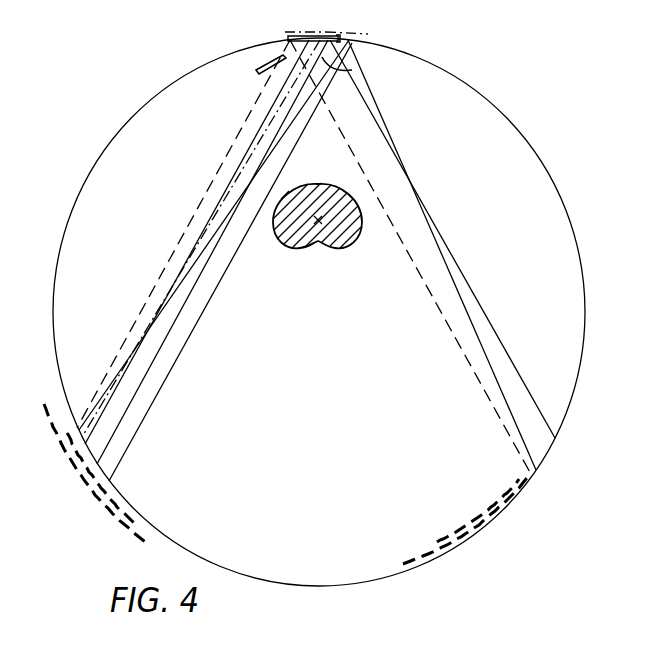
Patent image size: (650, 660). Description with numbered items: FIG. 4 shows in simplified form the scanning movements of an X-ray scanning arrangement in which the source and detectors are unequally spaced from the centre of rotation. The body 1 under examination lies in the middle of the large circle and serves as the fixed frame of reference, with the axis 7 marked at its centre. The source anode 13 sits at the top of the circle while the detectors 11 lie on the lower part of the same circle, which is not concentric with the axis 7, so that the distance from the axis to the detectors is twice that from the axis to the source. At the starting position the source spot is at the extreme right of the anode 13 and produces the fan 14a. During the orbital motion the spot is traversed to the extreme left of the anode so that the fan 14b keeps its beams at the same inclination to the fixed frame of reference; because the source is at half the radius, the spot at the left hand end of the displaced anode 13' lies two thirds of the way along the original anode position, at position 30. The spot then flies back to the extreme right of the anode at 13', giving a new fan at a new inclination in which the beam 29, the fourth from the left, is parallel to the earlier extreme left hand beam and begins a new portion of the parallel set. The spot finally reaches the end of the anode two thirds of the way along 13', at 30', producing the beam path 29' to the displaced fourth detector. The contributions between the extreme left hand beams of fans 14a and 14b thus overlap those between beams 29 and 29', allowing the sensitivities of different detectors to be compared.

The body 1 is at (314, 192).
The axis 7 is at (318, 224).
The detectors 11 is at (557, 437).
The source anode 13 is at (269, 38).
The source anode position 13' is at (380, 38).
The fan 14a is at (352, 70).
The fan 14b is at (249, 74).
The beam 29 is at (317, 260).
The beam path 29' is at (198, 242).
The position 30 is at (288, 18).
The position 30' is at (355, 18).